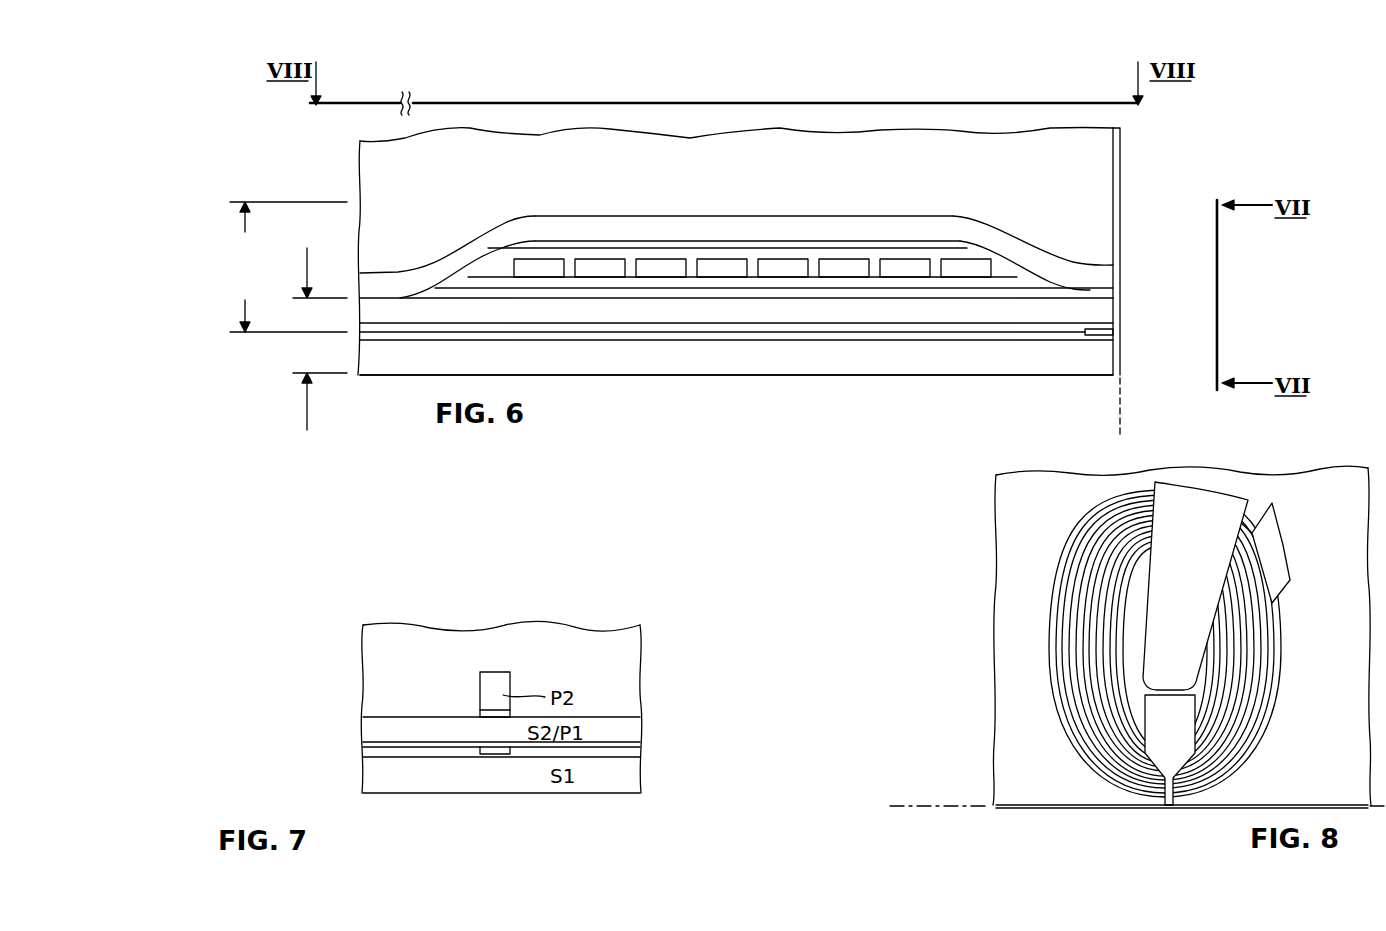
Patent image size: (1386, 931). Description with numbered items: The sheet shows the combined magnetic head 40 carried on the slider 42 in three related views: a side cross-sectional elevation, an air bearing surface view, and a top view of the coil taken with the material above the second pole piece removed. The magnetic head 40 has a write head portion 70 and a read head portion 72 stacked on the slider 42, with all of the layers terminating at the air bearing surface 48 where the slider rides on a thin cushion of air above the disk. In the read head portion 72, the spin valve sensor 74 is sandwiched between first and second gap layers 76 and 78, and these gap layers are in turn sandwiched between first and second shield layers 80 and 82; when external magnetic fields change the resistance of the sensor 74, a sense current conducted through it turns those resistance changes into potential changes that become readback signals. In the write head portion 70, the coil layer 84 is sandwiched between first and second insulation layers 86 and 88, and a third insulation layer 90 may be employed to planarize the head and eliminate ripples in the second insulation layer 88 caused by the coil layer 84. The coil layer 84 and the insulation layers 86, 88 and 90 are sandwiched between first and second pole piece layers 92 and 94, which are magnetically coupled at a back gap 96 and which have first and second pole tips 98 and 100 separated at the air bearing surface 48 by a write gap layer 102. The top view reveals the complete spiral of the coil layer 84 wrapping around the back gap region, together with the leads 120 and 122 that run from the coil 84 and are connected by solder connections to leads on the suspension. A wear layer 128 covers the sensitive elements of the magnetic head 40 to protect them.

In FIG. 6, the magnetic head 40 is at (350, 149).
In FIG. 7, the magnetic head 40 is at (658, 638).
In FIG. 8, the magnetic head 40 is at (1280, 630).
In FIG. 7, the slider 42 is at (367, 645).
In FIG. 6, the air bearing surface 48 is at (1159, 407).
In FIG. 8, the air bearing surface 48 is at (937, 806).
In FIG. 6, the write head portion 70 is at (280, 267).
In FIG. 6, the read head portion 72 is at (313, 439).
In FIG. 6, the spin valve sensor 74 is at (1112, 333).
In FIG. 7, the spin valve sensor 74 is at (497, 754).
In FIG. 6, the first gap layer 76 is at (800, 340).
In FIG. 7, the first gap layer 76 is at (415, 757).
In FIG. 6, the second gap layer 78 is at (770, 323).
In FIG. 7, the second gap layer 78 is at (605, 747).
In FIG. 8, the second gap layer 78 is at (1169, 729).
In FIG. 6, the first shield layer 80 is at (873, 362).
In FIG. 7, the first shield layer 80 is at (633, 778).
In FIG. 6, the second shield layer 82 is at (736, 370).
In FIG. 7, the second shield layer 82 is at (438, 729).
In FIG. 6, the coil layer 84 is at (783, 265).
In FIG. 8, the coil layer 84 is at (1263, 715).
In FIG. 6, the first insulation layer 86 is at (668, 283).
In FIG. 8, the first insulation layer 86 is at (1157, 808).
In FIG. 6, the second insulation layer 88 is at (1008, 268).
In FIG. 6, the third insulation layer 90 is at (577, 245).
In FIG. 6, the first pole piece layer 92 is at (970, 312).
In FIG. 7, the first pole piece layer 92 is at (363, 731).
In FIG. 6, the second pole piece layer 94 is at (875, 228).
In FIG. 6, the back gap 96 is at (388, 272).
In FIG. 6, the first pole tip 98 is at (1112, 314).
In FIG. 6, the second pole tip 100 is at (1108, 277).
In FIG. 7, the second pole tip 100 is at (500, 677).
In FIG. 6, the write gap layer 102 is at (1112, 296).
In FIG. 7, the write gap layer 102 is at (497, 710).
In FIG. 8, the lead 120 is at (1186, 579).
In FIG. 8, the lead 122 is at (1262, 540).
In FIG. 6, the wear layer 128 is at (1122, 195).
In FIG. 8, the wear layer 128 is at (1003, 808).